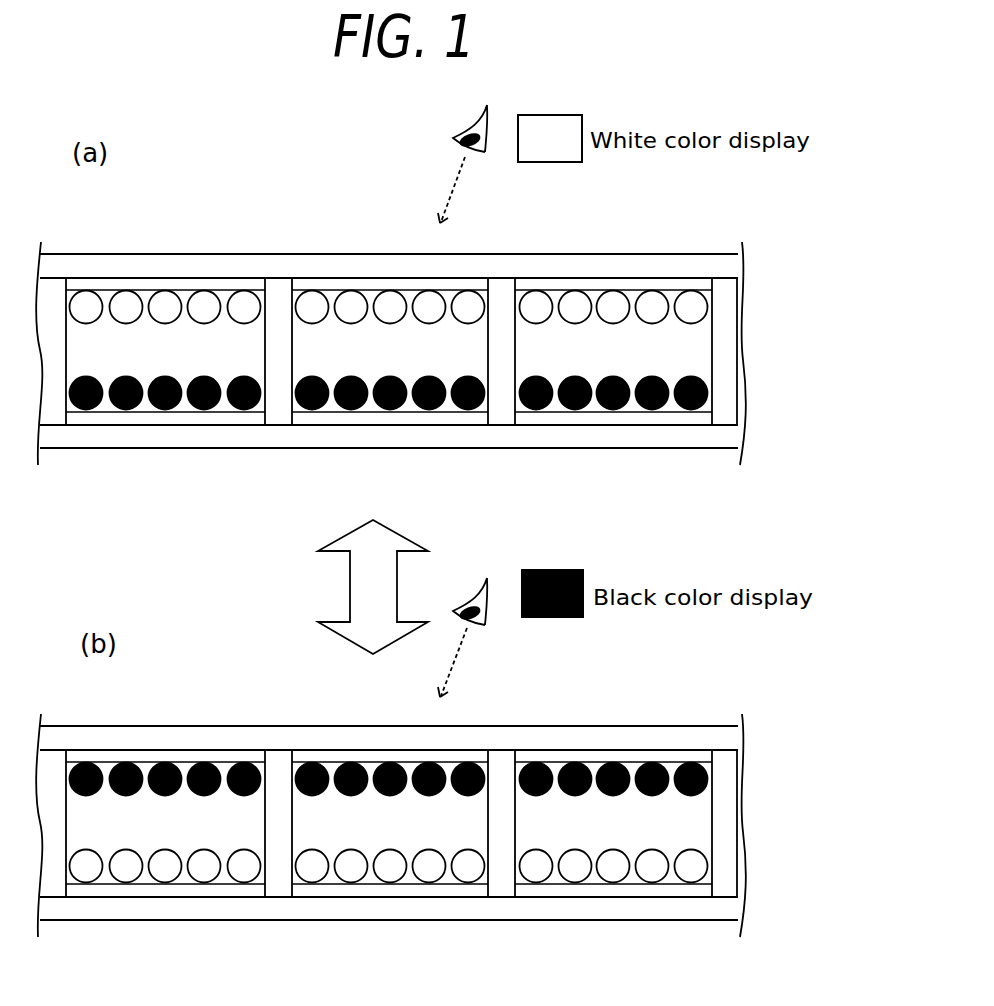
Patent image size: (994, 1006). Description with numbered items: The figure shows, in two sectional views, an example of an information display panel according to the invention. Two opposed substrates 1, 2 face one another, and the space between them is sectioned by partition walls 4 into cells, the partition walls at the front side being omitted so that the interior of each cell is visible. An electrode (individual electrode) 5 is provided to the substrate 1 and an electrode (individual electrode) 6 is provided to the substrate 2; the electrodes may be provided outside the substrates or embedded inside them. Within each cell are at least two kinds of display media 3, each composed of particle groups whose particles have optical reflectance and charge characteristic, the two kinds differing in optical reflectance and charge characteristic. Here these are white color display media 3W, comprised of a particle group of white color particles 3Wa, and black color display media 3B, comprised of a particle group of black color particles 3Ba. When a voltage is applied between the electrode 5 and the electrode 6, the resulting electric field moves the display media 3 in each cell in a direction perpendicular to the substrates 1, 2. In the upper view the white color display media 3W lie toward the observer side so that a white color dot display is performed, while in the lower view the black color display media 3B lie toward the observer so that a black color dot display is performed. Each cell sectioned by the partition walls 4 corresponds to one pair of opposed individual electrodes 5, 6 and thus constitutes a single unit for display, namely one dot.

The substrate 1 is at (673, 442).
The substrate 2 is at (678, 268).
The display media 3 is at (820, 887).
The white color display media 3W is at (768, 887).
The black color display media 3B is at (768, 800).
The white color particles 3Wa is at (204, 300).
The black color particles 3Ba is at (203, 410).
The partition walls 4 is at (55, 392).
The electrode (individual electrode) 5 is at (593, 418).
The electrode (individual electrode) 6 is at (595, 284).